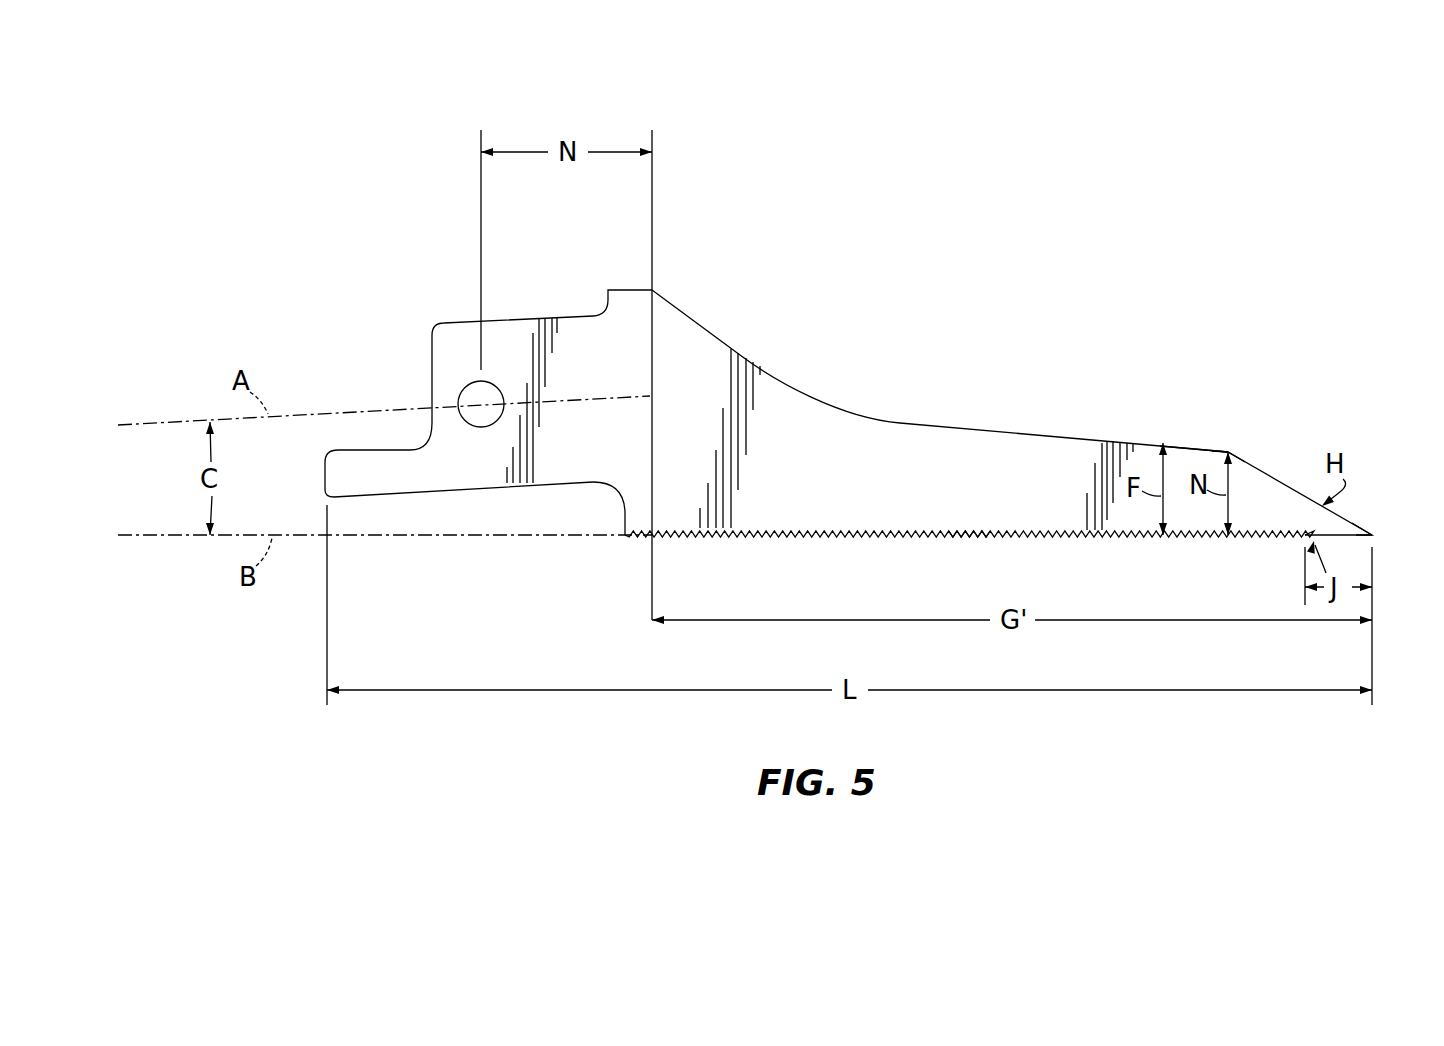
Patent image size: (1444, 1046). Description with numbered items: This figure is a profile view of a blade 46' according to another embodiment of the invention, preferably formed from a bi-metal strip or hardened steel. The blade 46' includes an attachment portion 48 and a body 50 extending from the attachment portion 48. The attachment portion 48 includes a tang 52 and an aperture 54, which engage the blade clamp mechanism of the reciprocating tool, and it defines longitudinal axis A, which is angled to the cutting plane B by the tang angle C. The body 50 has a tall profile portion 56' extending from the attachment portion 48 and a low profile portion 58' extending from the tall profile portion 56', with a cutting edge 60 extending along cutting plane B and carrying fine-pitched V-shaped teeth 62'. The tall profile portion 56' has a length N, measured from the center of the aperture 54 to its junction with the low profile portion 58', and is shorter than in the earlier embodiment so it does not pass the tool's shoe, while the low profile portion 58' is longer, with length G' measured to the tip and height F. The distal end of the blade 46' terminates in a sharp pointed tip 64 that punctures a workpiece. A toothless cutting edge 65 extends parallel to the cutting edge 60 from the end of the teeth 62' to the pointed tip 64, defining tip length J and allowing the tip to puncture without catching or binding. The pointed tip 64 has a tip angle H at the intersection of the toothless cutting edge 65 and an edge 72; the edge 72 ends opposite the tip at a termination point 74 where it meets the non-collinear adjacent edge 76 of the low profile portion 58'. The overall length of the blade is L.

The blade 46' is at (872, 393).
The attachment portion 48 is at (530, 318).
The body 50 is at (614, 289).
The tang 52 is at (360, 466).
The aperture 54 is at (462, 398).
The tall profile portion 56' is at (669, 276).
The low profile portion 58' is at (984, 406).
The cutting edge 60 is at (860, 535).
The teeth 62' is at (939, 559).
The pointed tip 64 is at (1372, 535).
The toothless cutting edge 65 is at (1374, 559).
The edge 72 is at (1275, 475).
The termination point 74 is at (1229, 452).
The adjacent edge 76 is at (1173, 447).